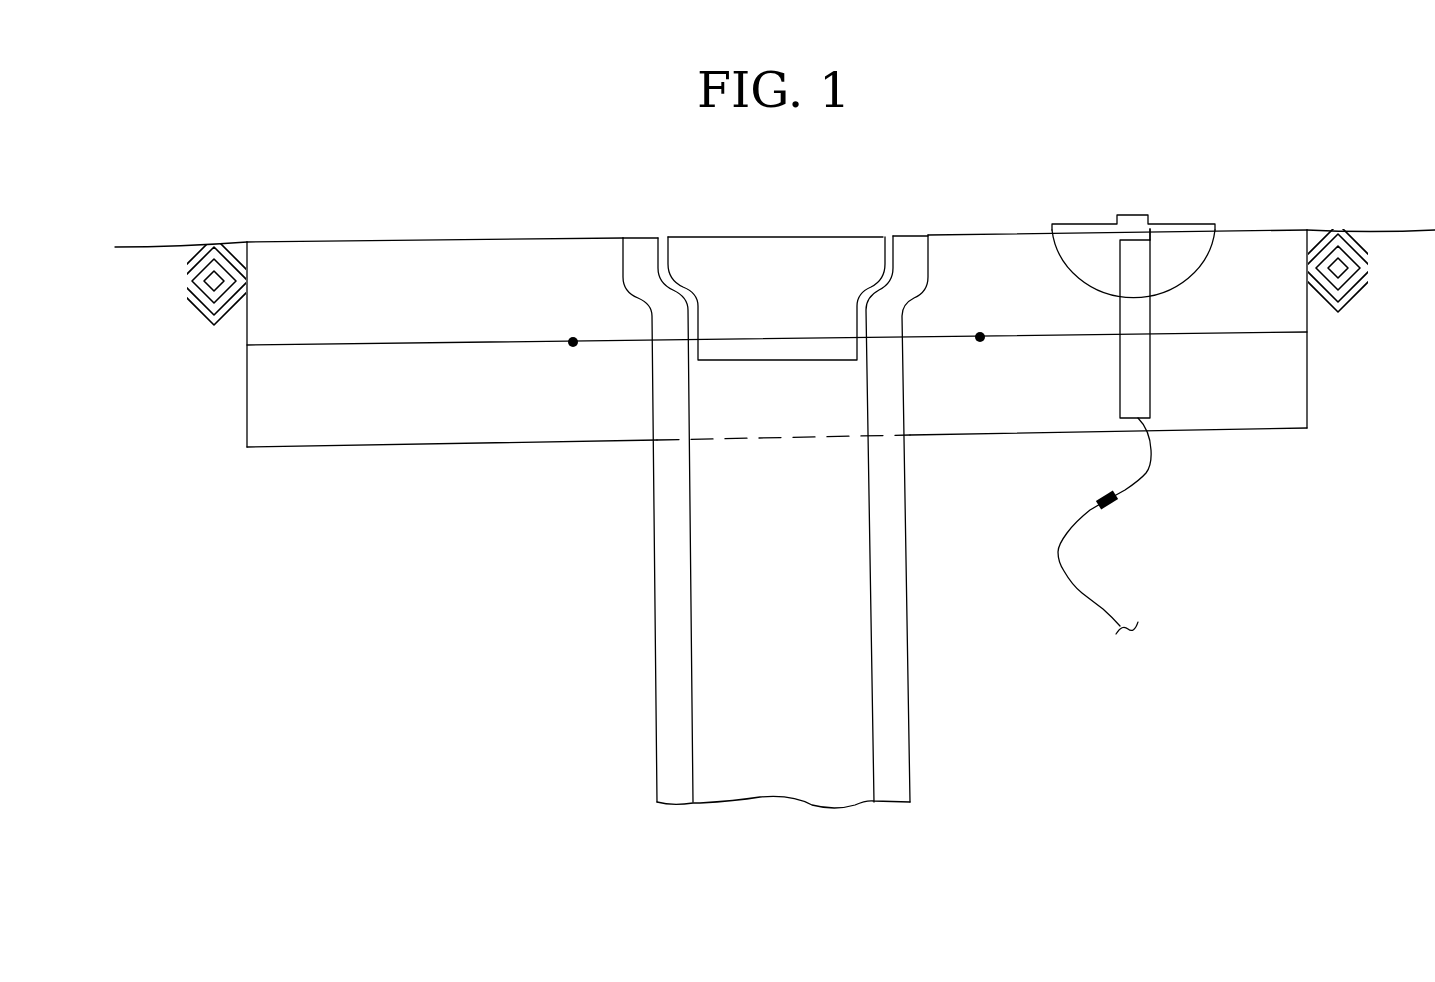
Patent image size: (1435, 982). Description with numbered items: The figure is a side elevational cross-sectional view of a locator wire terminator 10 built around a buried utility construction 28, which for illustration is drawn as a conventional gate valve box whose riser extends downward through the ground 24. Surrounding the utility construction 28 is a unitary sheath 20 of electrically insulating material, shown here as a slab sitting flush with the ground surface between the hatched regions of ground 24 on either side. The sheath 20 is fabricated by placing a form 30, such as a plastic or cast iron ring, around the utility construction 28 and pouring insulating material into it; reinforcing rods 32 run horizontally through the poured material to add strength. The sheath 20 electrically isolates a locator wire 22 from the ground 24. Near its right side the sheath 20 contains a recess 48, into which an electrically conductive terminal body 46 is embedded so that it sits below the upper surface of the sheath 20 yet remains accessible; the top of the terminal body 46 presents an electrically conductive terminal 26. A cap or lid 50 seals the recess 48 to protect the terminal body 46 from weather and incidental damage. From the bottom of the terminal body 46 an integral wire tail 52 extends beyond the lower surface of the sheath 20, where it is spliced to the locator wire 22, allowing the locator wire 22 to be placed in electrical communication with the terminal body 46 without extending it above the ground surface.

The locator wire terminator 10 is at (1052, 128).
The sheath 20 is at (443, 262).
The locator wire 22 is at (1081, 593).
The ground 24 is at (1340, 240).
The electrically conductive terminal 26 is at (1152, 233).
The utility construction 28 is at (912, 245).
The form 30 is at (247, 432).
The reinforcing rods 32 is at (305, 345).
The terminal body 46 is at (1132, 322).
The recess 48 is at (1190, 250).
The cap or lid 50 is at (1097, 222).
The wire tail 52 is at (1144, 475).